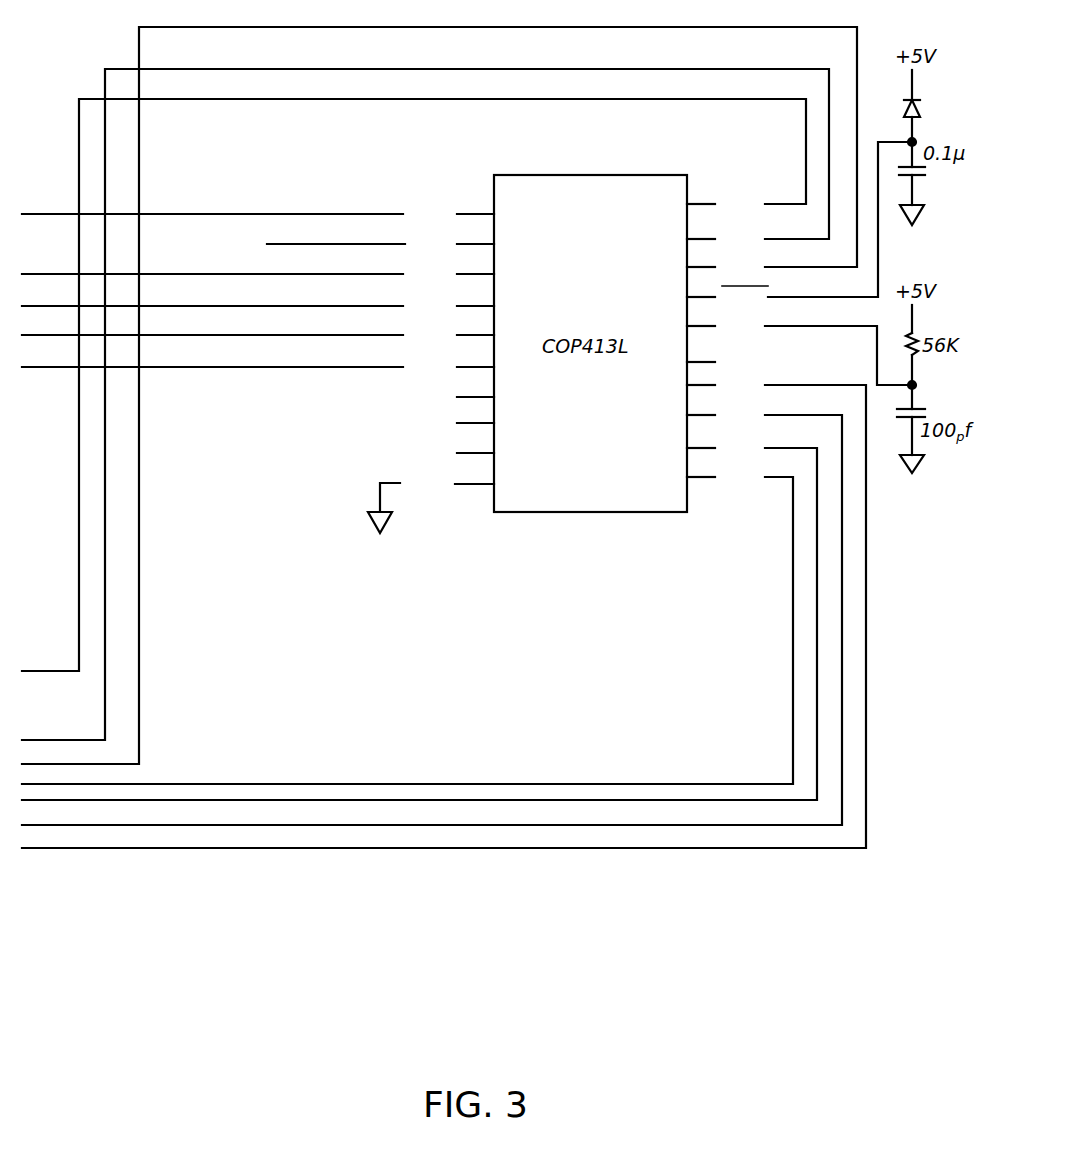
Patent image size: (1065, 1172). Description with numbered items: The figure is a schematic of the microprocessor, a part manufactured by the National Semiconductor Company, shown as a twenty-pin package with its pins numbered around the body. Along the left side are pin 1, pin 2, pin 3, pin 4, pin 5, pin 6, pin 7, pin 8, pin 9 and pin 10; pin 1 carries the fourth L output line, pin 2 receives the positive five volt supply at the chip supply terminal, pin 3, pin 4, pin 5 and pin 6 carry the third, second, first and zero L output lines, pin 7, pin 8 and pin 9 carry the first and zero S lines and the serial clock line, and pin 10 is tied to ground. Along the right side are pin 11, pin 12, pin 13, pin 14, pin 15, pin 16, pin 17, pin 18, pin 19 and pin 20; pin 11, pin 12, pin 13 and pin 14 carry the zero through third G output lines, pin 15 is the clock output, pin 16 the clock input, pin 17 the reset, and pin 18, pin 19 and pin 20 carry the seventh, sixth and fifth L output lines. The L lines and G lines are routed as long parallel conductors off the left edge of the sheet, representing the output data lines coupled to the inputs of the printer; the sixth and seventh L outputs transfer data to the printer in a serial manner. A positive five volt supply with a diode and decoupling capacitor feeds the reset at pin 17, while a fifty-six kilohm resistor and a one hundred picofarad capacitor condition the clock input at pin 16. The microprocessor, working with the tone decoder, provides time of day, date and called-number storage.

The pin 1 (L4) 1 is at (266, 214).
The pin 2 (VCC) 2 is at (361, 247).
The pin 3 (L3) 3 is at (266, 274).
The pin 4 (L2) 4 is at (266, 306).
The pin 5 (L1) 5 is at (266, 335).
The pin 6 (L0) 6 is at (266, 367).
The pin 7 (S1) 7 is at (464, 397).
The pin 8 (S0) 8 is at (464, 423).
The pin 9 (SK) 9 is at (464, 453).
The pin 10 (GND) 10 is at (445, 503).
The pin 11 (G0) 11 is at (407, 625).
The pin 12 (G1) 12 is at (419, 618).
The pin 13 (G2) 13 is at (432, 614).
The pin 14 (G3) 14 is at (444, 611).
The pin 15 (CKO) 15 is at (714, 362).
The pin 16 (CKI) 16 is at (786, 350).
The pin 17 (RESET) 17 is at (786, 225).
The pin 18 (L7) 18 is at (439, 395).
The pin 19 (L6) 19 is at (425, 404).
The pin 20 (L5) 20 is at (414, 385).